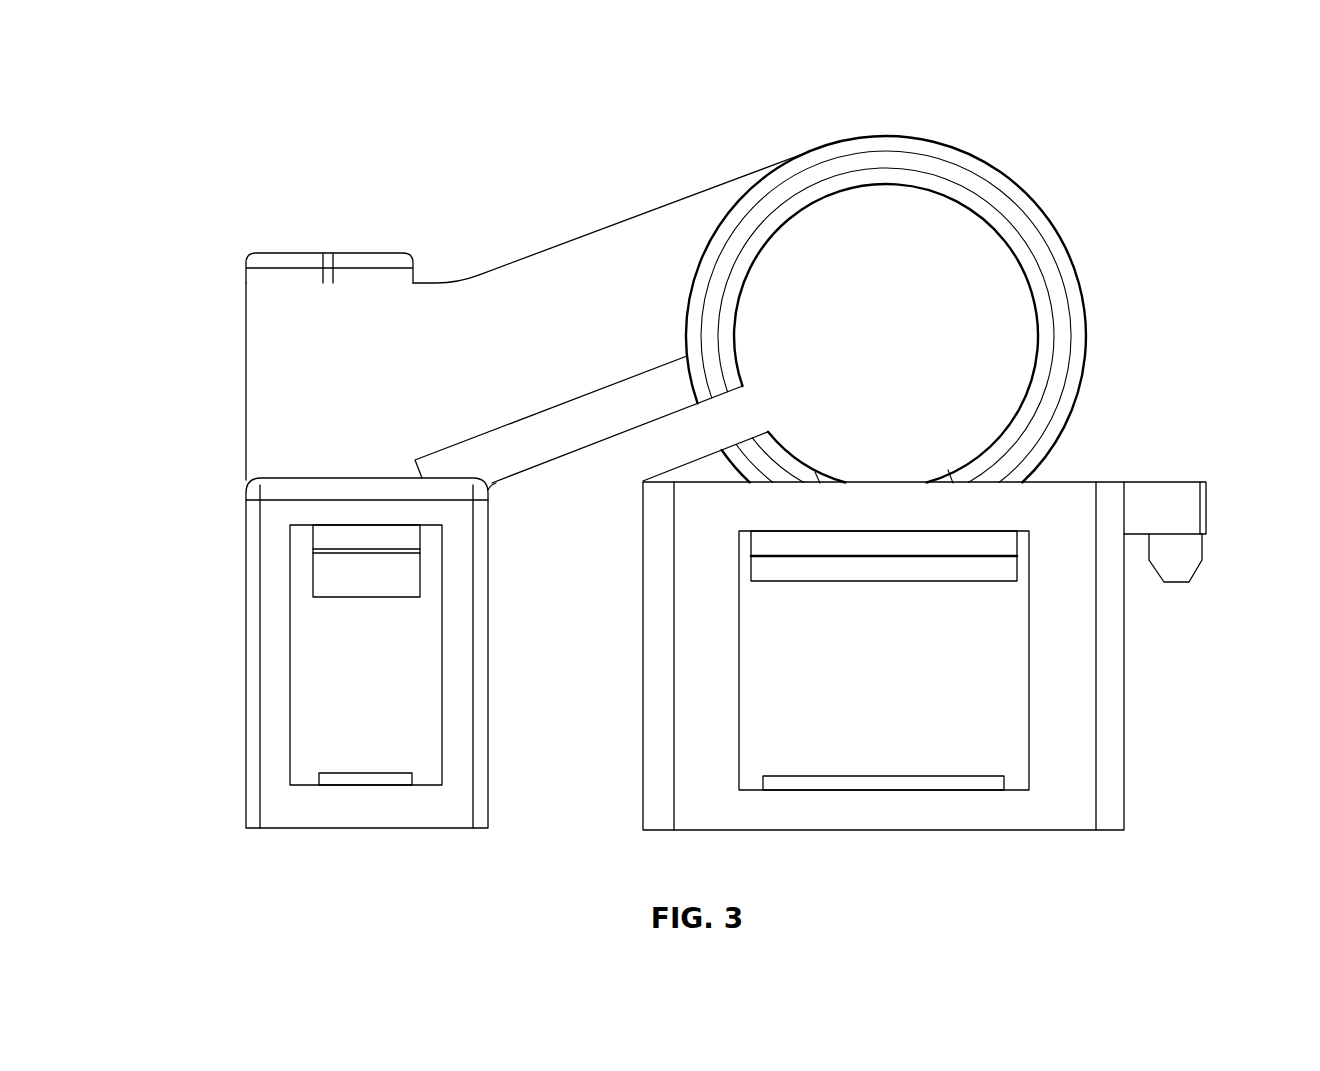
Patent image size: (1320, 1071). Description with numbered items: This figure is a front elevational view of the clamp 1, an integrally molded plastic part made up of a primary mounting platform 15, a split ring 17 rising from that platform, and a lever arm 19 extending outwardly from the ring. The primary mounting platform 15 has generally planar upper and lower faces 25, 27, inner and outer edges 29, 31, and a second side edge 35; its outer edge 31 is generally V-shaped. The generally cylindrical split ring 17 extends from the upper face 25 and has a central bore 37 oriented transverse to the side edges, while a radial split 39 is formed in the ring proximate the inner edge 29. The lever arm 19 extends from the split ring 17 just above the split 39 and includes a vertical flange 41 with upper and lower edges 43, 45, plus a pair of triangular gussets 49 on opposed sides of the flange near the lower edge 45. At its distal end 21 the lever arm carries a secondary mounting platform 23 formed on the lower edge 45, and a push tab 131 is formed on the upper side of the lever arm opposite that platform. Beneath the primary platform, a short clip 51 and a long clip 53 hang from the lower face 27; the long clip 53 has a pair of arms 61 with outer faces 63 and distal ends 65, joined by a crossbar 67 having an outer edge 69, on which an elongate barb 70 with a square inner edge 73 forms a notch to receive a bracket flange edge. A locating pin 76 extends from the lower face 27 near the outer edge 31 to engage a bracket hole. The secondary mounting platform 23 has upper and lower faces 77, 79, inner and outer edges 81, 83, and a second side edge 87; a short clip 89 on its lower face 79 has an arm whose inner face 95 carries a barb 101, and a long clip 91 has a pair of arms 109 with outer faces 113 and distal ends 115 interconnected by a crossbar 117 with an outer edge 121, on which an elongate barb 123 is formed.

The clamp 1 is at (340, 91).
The primary mounting platform 15 is at (1155, 482).
The split ring 17 is at (886, 283).
The lever arm 19 is at (614, 316).
The distal end 21 is at (245, 318).
The secondary mounting platform 23 is at (287, 475).
The upper face 25 is at (1055, 482).
The lower face 27 is at (908, 533).
The inner edge 29 is at (643, 495).
The outer edge 31 is at (1208, 497).
The second side edge 35 is at (887, 493).
The central bore 37 is at (906, 188).
The radial split 39 is at (740, 392).
The vertical flange 41 is at (710, 188).
The upper edge 43 is at (523, 258).
The lower edge 45 is at (595, 446).
The triangular gussets 49 is at (617, 383).
The short clip 51 is at (799, 582).
The long clip 53 is at (1127, 725).
The arms 61 is at (643, 598).
The outer faces 63 is at (691, 640).
The distal ends 65 is at (693, 830).
The crossbar 67 is at (855, 828).
The outer edge 69 is at (942, 828).
The elongate barb 70 is at (838, 774).
The square inner edge 73 is at (932, 778).
The locating pin 76 is at (1206, 560).
The upper face 77 is at (340, 477).
The lower face 79 is at (427, 528).
The inner edge 81 is at (487, 503).
The outer edge 83 is at (242, 507).
The second side edge 87 is at (290, 510).
The short clip 89 is at (330, 597).
The long clip 91 is at (245, 688).
The inner face 95 is at (337, 533).
The barb 101 is at (373, 590).
The arms 109 is at (270, 697).
The outer faces 113 is at (265, 652).
The distal ends 115 is at (263, 830).
The crossbar 117 is at (340, 828).
The outer edge 121 is at (385, 818).
The elongate barb 123 is at (380, 771).
The push tab 131 is at (292, 251).